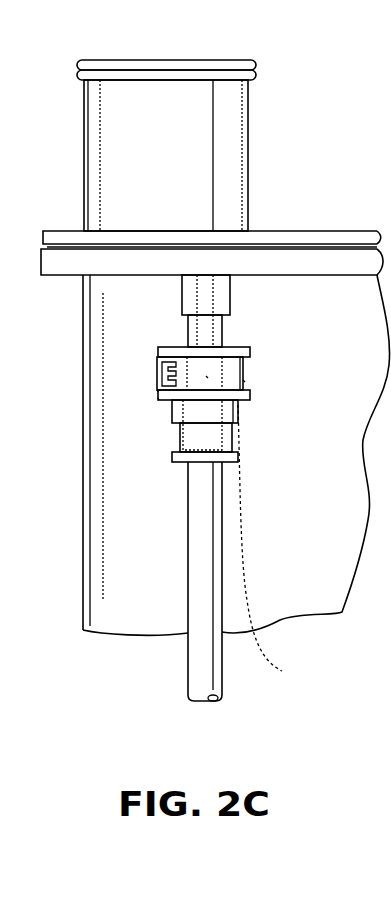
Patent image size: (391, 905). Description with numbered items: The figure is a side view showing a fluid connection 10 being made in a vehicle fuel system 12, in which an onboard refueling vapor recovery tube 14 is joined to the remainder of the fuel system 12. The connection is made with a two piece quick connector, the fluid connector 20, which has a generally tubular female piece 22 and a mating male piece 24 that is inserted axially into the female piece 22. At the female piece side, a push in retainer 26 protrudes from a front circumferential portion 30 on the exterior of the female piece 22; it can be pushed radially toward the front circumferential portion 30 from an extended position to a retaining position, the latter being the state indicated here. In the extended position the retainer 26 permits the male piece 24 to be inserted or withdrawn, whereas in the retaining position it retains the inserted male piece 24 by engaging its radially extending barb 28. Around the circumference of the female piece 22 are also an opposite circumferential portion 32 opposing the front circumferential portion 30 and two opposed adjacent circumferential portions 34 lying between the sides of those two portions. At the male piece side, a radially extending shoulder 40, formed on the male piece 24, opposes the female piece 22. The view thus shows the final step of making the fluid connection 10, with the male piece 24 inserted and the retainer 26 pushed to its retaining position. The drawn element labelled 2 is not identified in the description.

The assembly 2 is at (195, 455).
The fluid connection 10 is at (155, 397).
The fuel system 12 is at (43, 233).
The onboard refueling vapor recovery (ORVR) tube 14 is at (187, 660).
The fluid connector 20 is at (171, 376).
The female piece 22 is at (245, 368).
The male piece 24 is at (230, 287).
The retainer 26 is at (156, 391).
The barb 28 is at (271, 543).
The front circumferential portion 30 is at (160, 379).
The opposite circumferential portion 32 is at (245, 382).
The adjacent circumferential portions 34 is at (208, 378).
The shoulder 40 is at (233, 338).